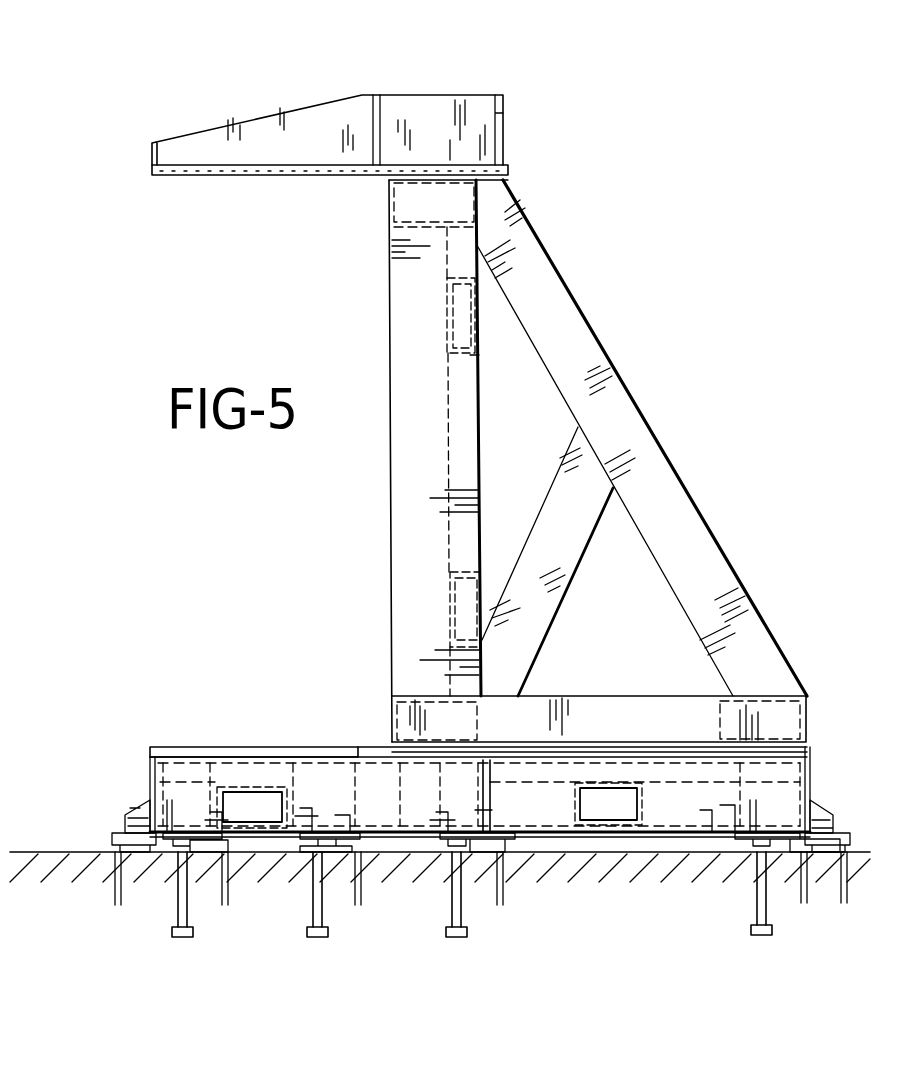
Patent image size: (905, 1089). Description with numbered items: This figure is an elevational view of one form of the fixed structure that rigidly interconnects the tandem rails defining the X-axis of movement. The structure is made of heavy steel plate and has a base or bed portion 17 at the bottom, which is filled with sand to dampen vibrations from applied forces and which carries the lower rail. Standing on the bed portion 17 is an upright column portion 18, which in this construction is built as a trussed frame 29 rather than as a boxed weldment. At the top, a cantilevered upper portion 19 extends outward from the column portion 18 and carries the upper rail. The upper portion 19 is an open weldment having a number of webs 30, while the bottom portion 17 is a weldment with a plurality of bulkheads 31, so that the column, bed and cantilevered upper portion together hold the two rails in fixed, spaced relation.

The base portion 17 is at (289, 748).
The upright column portion 18 is at (390, 544).
The cantilevered upper portion 19 is at (258, 176).
The trussed frame 29 is at (650, 464).
The webs 30 is at (349, 113).
The bulkheads 31 is at (383, 870).